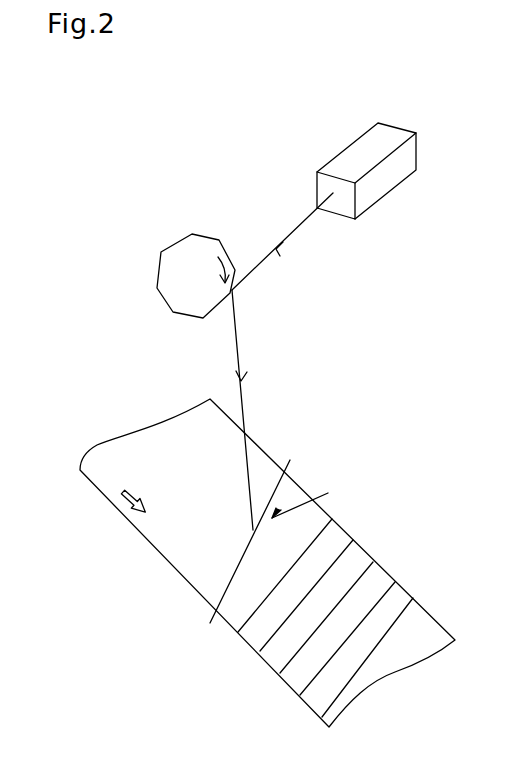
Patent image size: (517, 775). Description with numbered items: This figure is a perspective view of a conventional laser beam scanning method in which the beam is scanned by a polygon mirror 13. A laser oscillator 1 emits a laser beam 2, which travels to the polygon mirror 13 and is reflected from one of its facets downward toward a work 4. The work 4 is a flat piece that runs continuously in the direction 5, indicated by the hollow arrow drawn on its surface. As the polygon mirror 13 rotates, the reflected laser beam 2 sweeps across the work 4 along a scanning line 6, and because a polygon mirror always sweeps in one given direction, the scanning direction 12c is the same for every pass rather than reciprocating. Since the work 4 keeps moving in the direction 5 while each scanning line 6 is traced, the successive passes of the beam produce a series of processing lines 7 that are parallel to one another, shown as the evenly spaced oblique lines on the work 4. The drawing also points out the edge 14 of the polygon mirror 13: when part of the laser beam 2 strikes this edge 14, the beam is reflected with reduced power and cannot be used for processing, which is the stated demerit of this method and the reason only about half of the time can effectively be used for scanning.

The laser oscillator 1 is at (399, 167).
The laser beam 2 is at (291, 233).
The polygon mirror 13 is at (197, 232).
The edge of the polygon mirror 14 is at (219, 240).
The work 4 is at (97, 473).
The direction 5 is at (115, 503).
The scanning line 6 is at (230, 580).
The scanning direction 12c is at (324, 496).
The processing lines 7 is at (258, 608).